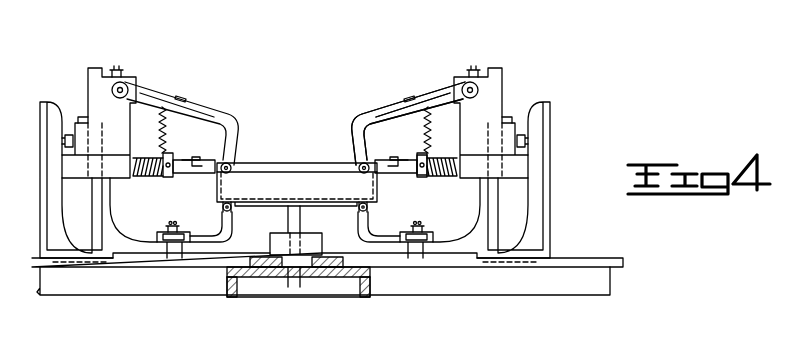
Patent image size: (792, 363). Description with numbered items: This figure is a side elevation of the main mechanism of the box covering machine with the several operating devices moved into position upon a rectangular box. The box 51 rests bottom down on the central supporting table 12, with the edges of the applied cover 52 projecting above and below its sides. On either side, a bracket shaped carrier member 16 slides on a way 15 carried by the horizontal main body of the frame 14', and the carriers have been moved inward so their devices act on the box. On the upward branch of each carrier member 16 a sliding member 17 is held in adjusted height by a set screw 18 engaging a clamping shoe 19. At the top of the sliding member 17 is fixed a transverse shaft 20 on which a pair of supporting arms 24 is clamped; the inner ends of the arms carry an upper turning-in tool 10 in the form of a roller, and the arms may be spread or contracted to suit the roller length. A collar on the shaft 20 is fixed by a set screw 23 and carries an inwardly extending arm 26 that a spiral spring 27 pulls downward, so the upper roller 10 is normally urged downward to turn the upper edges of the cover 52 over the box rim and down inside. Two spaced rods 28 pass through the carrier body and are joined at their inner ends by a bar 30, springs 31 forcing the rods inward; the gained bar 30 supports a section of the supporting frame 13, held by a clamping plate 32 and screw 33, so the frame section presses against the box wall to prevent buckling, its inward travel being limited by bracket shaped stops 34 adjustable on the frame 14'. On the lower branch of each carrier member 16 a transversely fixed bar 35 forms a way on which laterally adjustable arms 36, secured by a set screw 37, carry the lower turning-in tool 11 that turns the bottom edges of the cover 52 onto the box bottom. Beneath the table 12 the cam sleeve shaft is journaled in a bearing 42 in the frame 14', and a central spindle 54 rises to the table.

The upper turning-in tool 10 is at (231, 167).
The lower turning-in tool 11 is at (223, 206).
The table 12 is at (272, 204).
The supporting frame 13 is at (233, 143).
The main body of the frame 14' is at (323, 281).
The ways 15 is at (36, 258).
The carrier member 16 is at (120, 233).
The sliding member 17 is at (295, 123).
The set screw 18 is at (65, 140).
The clamping shoe 19 is at (82, 118).
The shaft 20 is at (128, 86).
The set screw 23 is at (119, 70).
The supporting arms 24 is at (392, 117).
The arm 26 is at (187, 100).
The spiral spring 27 is at (166, 138).
The rods 28 is at (150, 178).
The bar 30 is at (192, 174).
The springs 31 is at (427, 173).
The clamping plate 32 is at (163, 156).
The screw 33 is at (392, 158).
The bracket shaped stops 34 is at (44, 200).
The bar 35 is at (177, 245).
The laterally adjustable arms 36 is at (221, 226).
The set screw 37 is at (172, 223).
The bearing 42 is at (302, 277).
The box 51 is at (297, 185).
The cover 52 is at (283, 165).
The shaft 54 is at (300, 215).